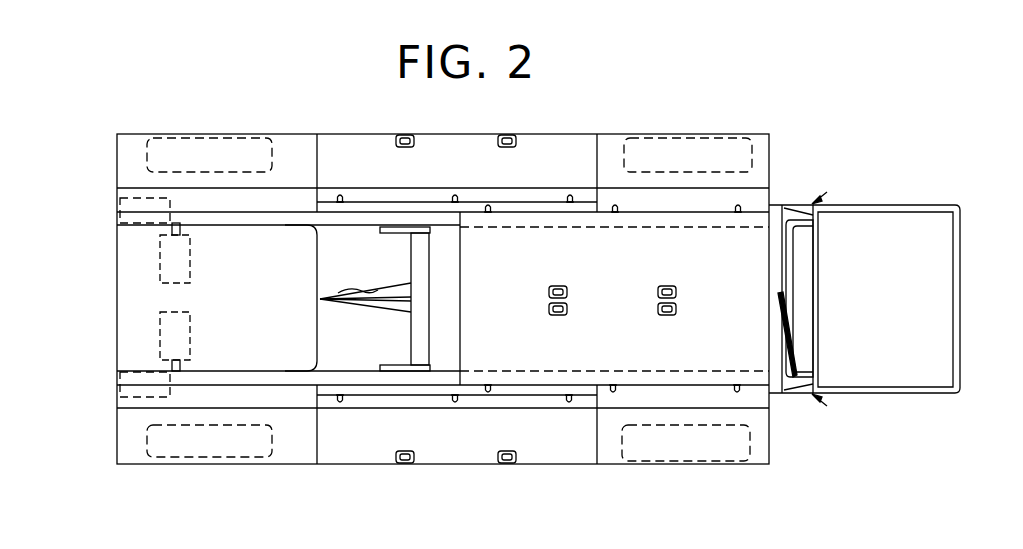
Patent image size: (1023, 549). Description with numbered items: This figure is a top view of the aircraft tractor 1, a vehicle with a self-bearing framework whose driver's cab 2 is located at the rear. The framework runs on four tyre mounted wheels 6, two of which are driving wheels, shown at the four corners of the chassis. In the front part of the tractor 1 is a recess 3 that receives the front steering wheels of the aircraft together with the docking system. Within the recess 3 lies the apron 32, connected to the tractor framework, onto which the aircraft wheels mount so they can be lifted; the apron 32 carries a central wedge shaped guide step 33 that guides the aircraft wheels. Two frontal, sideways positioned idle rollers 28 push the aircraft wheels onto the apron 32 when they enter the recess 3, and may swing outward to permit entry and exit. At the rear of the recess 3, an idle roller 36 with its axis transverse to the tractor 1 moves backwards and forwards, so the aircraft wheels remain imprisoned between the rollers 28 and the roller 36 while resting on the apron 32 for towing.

The tractor 1 is at (555, 155).
The driver's cab 2 is at (932, 247).
The recess 3 is at (285, 233).
The tyre mounted wheels 6 is at (673, 157).
The idle rollers 28 is at (180, 273).
The apron 32 is at (337, 263).
The wedge shaped guide step 33 is at (320, 300).
The idle roller 36 is at (423, 278).